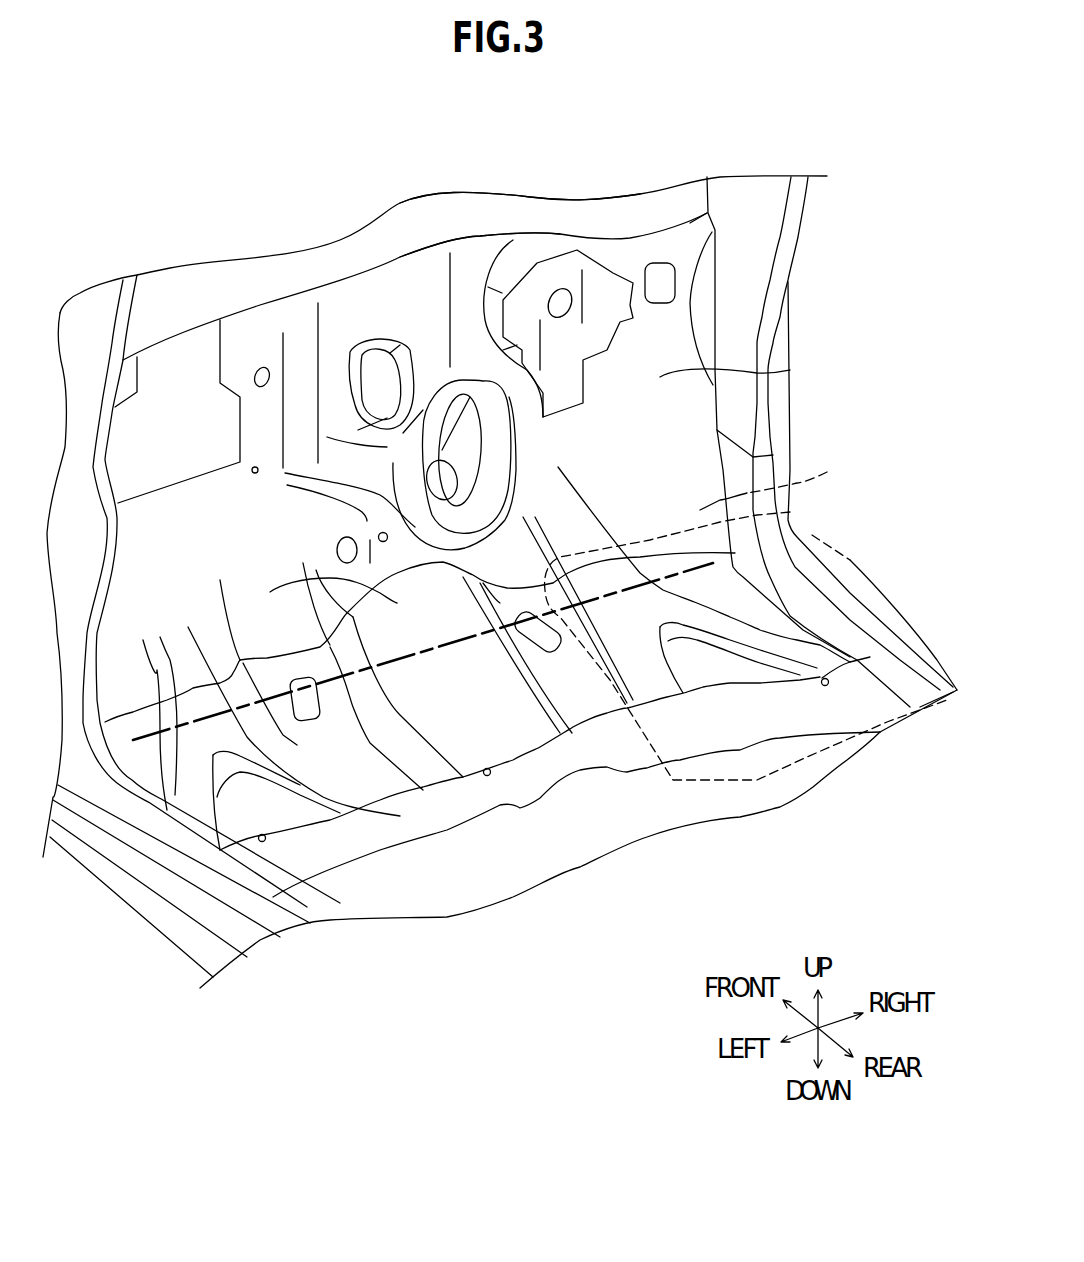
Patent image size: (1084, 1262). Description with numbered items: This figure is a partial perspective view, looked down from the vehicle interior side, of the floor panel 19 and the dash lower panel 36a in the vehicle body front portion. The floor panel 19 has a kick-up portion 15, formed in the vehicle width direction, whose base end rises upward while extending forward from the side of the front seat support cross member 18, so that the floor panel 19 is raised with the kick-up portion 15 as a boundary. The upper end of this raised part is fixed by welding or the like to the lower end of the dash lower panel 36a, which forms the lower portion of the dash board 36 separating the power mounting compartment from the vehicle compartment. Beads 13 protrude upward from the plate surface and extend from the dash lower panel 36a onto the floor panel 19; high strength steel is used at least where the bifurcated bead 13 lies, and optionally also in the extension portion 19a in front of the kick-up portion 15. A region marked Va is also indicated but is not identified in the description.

The bead 13 is at (792, 655).
The kick-up portion 15 is at (827, 472).
The front seat support cross member 18 is at (347, 840).
The floor panel 19 is at (810, 588).
The extension portion 19a is at (270, 592).
The dash board 36 is at (455, 267).
The dash lower panel 36a is at (790, 370).
The vertical region Va is at (753, 780).